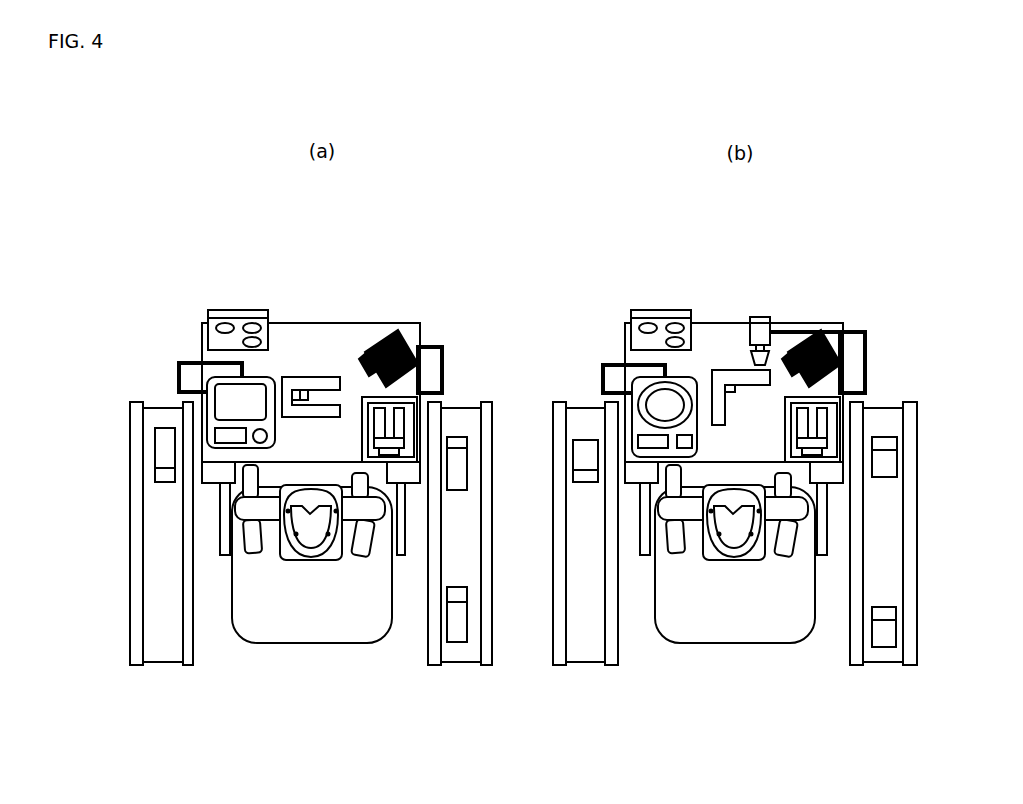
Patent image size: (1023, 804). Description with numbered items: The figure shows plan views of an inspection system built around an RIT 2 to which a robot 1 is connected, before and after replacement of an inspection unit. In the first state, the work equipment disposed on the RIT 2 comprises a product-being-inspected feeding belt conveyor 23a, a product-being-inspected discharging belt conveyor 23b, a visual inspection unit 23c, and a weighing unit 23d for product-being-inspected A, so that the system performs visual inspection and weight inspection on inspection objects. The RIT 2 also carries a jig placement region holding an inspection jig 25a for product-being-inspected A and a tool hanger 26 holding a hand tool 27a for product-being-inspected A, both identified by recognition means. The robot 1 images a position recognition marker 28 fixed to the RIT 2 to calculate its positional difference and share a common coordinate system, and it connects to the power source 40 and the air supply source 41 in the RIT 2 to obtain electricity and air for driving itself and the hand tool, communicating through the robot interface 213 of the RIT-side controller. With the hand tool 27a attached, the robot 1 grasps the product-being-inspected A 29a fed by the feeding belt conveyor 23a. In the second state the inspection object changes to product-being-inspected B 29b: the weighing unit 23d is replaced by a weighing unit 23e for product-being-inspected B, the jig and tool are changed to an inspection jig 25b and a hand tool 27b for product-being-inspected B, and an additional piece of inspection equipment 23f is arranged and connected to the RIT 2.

The robot 1 is at (338, 645).
The RIT 2 is at (320, 324).
The product-being-inspected feeding belt conveyor 23a is at (457, 662).
The product-being-inspected discharging belt conveyor 23b is at (165, 660).
The visual inspection unit 23c is at (380, 343).
The weighing unit for product-being-inspected A 23d is at (228, 400).
The weighing unit for product-being-inspected B 23e is at (638, 383).
The additional piece of inspection equipment 23f is at (763, 317).
The inspection jig for product-being-inspected A 25a is at (320, 377).
The inspection jig for product-being-inspected B 25b is at (732, 377).
The tool hanger 26 is at (420, 437).
The hand tool for product-being-inspected A 27a is at (400, 422).
The hand tool for product-being-inspected B 27b is at (832, 410).
The position recognition marker 28 is at (208, 322).
The product-being-inspected A 29a is at (165, 438).
The product-being-inspected B 29b is at (883, 438).
The power source 40 is at (207, 484).
The air supply source 41 is at (522, 624).
The robot interface 213 is at (837, 477).